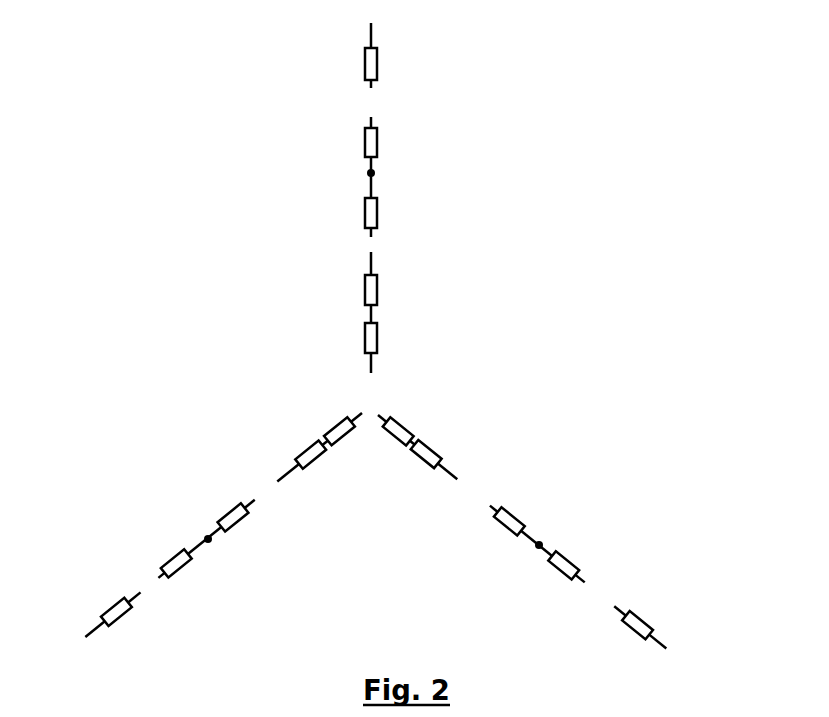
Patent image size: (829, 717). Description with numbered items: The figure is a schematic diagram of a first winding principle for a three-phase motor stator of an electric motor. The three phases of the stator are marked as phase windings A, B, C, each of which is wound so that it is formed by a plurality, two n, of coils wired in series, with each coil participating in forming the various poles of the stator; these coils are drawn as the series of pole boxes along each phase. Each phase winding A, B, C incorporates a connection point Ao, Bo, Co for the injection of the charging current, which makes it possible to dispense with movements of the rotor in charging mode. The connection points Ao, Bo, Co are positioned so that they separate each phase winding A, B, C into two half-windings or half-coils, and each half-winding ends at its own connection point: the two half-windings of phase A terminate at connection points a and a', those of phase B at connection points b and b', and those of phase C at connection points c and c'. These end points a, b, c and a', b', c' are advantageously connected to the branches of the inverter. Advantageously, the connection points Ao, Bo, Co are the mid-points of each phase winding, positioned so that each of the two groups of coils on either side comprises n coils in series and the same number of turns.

The phase winding A is at (326, 197).
The phase winding B is at (210, 521).
The phase winding C is at (540, 507).
The connection point Ao is at (371, 173).
The connection point Bo is at (208, 539).
The connection point Co is at (539, 545).
The connection point a is at (374, 25).
The connection point b is at (94, 629).
The connection point c is at (657, 642).
The connection point a' is at (370, 372).
The connection point b' is at (356, 417).
The connection point c' is at (382, 418).